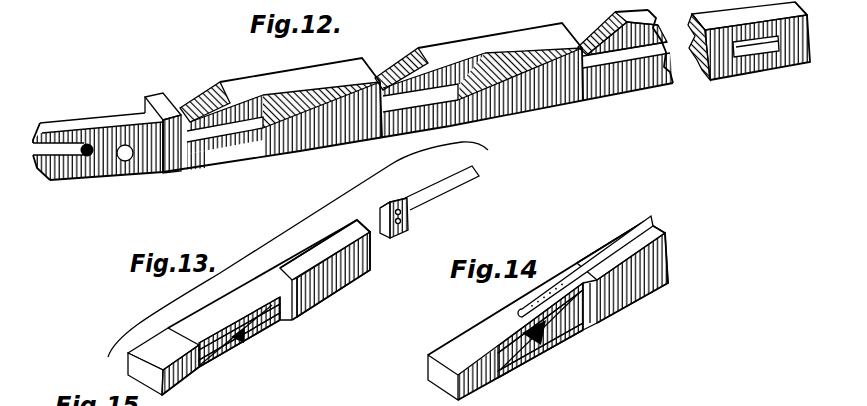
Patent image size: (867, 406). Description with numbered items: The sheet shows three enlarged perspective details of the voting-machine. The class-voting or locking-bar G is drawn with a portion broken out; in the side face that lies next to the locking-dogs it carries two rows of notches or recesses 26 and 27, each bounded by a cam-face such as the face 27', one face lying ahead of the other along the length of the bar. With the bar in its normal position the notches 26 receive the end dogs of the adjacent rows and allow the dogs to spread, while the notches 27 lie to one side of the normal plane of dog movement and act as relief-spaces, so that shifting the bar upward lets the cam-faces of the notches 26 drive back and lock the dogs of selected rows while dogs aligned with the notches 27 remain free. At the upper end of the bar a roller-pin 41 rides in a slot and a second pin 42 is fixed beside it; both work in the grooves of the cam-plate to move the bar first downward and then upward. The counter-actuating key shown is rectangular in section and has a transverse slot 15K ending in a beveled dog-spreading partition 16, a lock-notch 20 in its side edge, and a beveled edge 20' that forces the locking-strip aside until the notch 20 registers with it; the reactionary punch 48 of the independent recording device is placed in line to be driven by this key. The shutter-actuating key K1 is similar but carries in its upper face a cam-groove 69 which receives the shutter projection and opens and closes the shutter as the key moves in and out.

In FIG. 12, the locking-bar G is at (502, 38).
In FIG. 12, the notch 26 is at (595, 17).
In FIG. 12, the relief notch 27 is at (427, 96).
In FIG. 12, the cam-face 27' is at (513, 98).
In FIG. 12, the roller-pin 41 is at (67, 163).
In FIG. 12, the pin 42 is at (122, 163).
In FIG. 13, the transverse slot 15K is at (262, 330).
In FIG. 13, the locking-dog-spreading partition 16 is at (250, 345).
In FIG. 13, the lock-notch 20 is at (308, 312).
In FIG. 14, the lock-notch 20 is at (607, 313).
In FIG. 13, the beveled side edge 20' is at (329, 270).
In FIG. 14, the beveled side edge 20' is at (629, 272).
In FIG. 13, the reactionary punch 48 is at (433, 203).
In FIG. 14, the cam-groove 69 is at (603, 251).
In FIG. 14, the independent-candidate key K1 is at (476, 318).